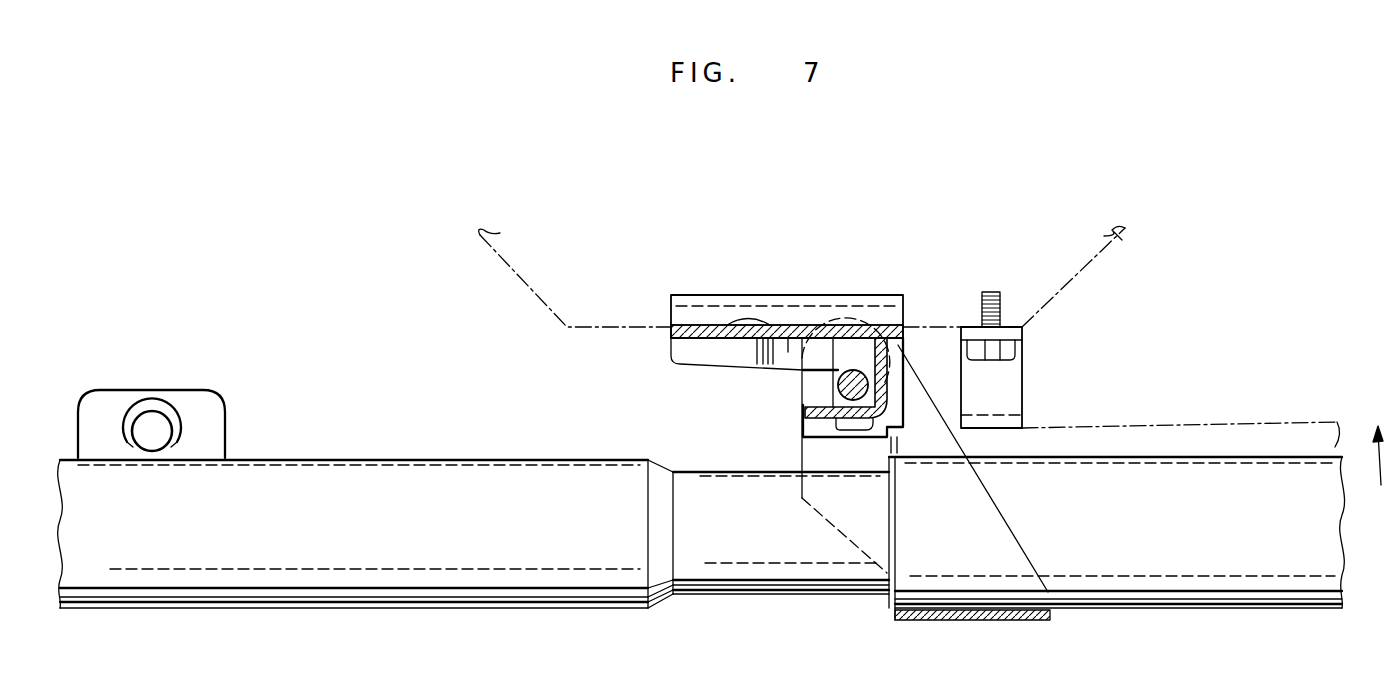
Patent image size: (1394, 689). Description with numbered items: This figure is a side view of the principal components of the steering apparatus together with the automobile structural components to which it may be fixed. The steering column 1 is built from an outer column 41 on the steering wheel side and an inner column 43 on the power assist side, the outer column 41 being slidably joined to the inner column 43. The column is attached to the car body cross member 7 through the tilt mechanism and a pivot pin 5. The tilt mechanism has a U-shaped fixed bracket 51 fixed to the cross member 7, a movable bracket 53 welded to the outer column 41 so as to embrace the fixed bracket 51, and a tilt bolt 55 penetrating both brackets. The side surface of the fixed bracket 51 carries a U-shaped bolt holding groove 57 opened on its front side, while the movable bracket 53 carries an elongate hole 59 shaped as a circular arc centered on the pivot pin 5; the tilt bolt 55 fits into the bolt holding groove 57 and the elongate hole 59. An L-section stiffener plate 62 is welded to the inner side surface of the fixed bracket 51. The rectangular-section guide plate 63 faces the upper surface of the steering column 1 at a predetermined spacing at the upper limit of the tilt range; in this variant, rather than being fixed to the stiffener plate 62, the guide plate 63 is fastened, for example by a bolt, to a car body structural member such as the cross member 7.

The steering column 1 is at (1096, 424).
The pivot pin 5 is at (157, 428).
The cross member 7 is at (1100, 255).
The outer column 41 is at (1237, 468).
The inner column 43 is at (548, 470).
The fixed bracket 51 is at (712, 303).
The movable bracket 53 is at (815, 452).
The tilt bolt 55 is at (858, 352).
The bolt holding groove 57 is at (806, 384).
The elongate hole 59 is at (856, 370).
The stiffener plate 62 is at (890, 375).
The guide plate 63 is at (1007, 390).